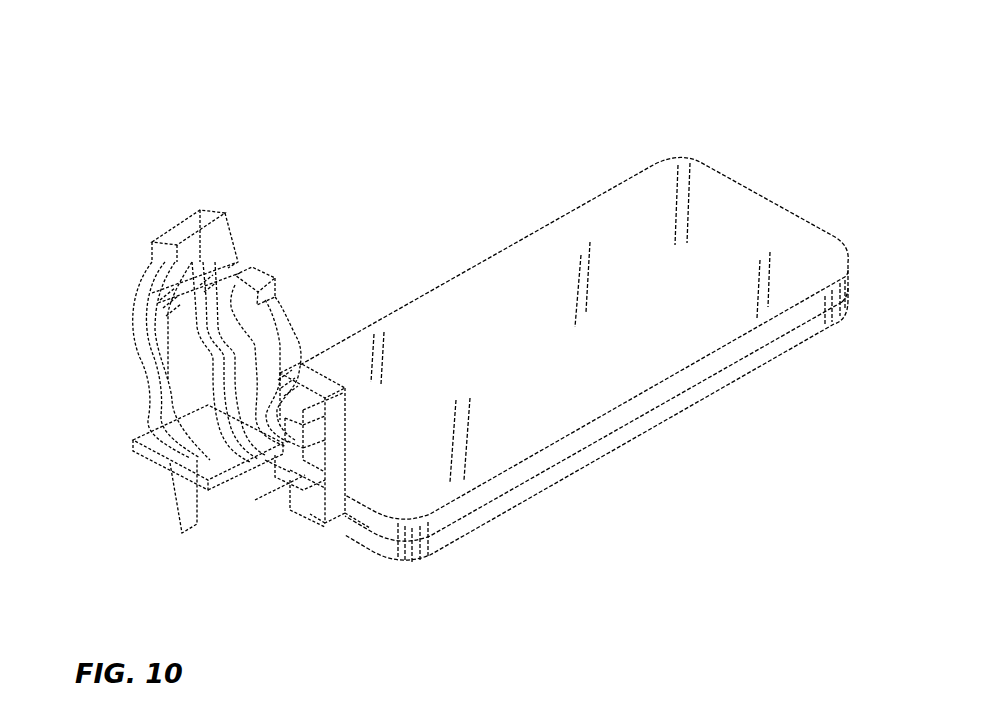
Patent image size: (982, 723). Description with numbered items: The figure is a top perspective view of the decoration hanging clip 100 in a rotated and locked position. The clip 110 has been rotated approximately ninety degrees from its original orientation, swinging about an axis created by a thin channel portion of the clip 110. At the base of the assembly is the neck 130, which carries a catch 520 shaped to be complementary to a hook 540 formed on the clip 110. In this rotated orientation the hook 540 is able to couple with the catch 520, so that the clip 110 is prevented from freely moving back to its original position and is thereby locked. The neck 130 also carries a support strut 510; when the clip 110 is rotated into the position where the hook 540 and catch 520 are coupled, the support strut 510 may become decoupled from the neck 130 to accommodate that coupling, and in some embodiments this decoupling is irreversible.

The decoration hanging clip 100 is at (153, 80).
The clip 110 is at (97, 278).
The neck 130 is at (318, 497).
The support strut 510 is at (170, 513).
The catch 520 is at (310, 410).
The hook 540 is at (302, 442).